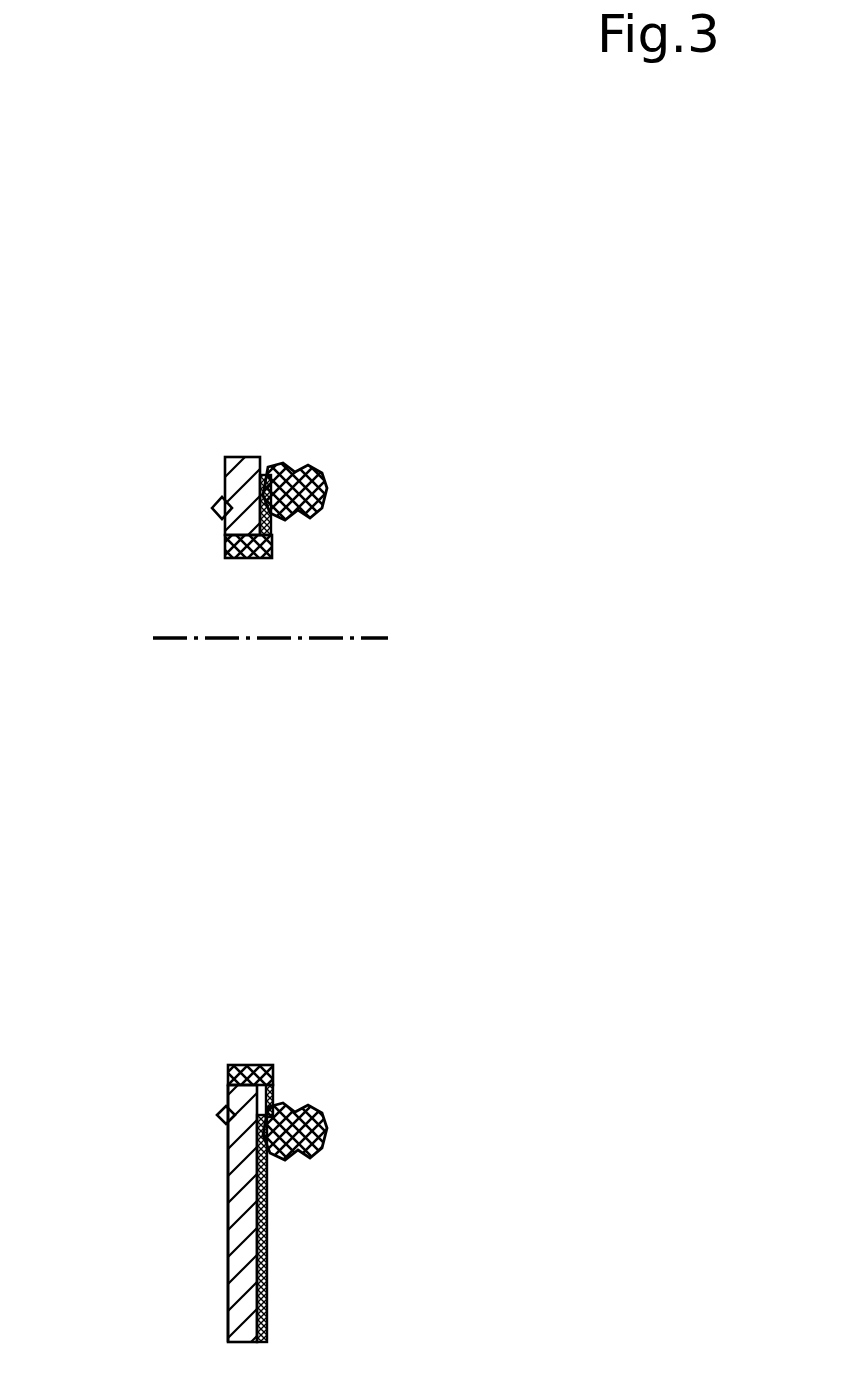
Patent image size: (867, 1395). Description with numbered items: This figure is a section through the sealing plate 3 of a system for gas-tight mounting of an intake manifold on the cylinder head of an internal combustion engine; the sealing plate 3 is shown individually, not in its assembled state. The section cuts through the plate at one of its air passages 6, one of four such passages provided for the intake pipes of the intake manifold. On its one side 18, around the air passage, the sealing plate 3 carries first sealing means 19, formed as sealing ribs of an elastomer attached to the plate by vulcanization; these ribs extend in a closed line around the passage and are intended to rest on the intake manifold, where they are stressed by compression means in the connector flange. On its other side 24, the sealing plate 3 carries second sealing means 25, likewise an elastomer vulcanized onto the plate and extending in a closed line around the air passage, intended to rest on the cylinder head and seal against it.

The sealing plate 3 is at (228, 1283).
The air passage 6 is at (268, 1065).
The one side of sealing plate 18 is at (262, 1252).
The first sealing means 19 is at (326, 490).
The other side of sealing plate 24 is at (228, 1210).
The second sealing means 25 is at (218, 1116).